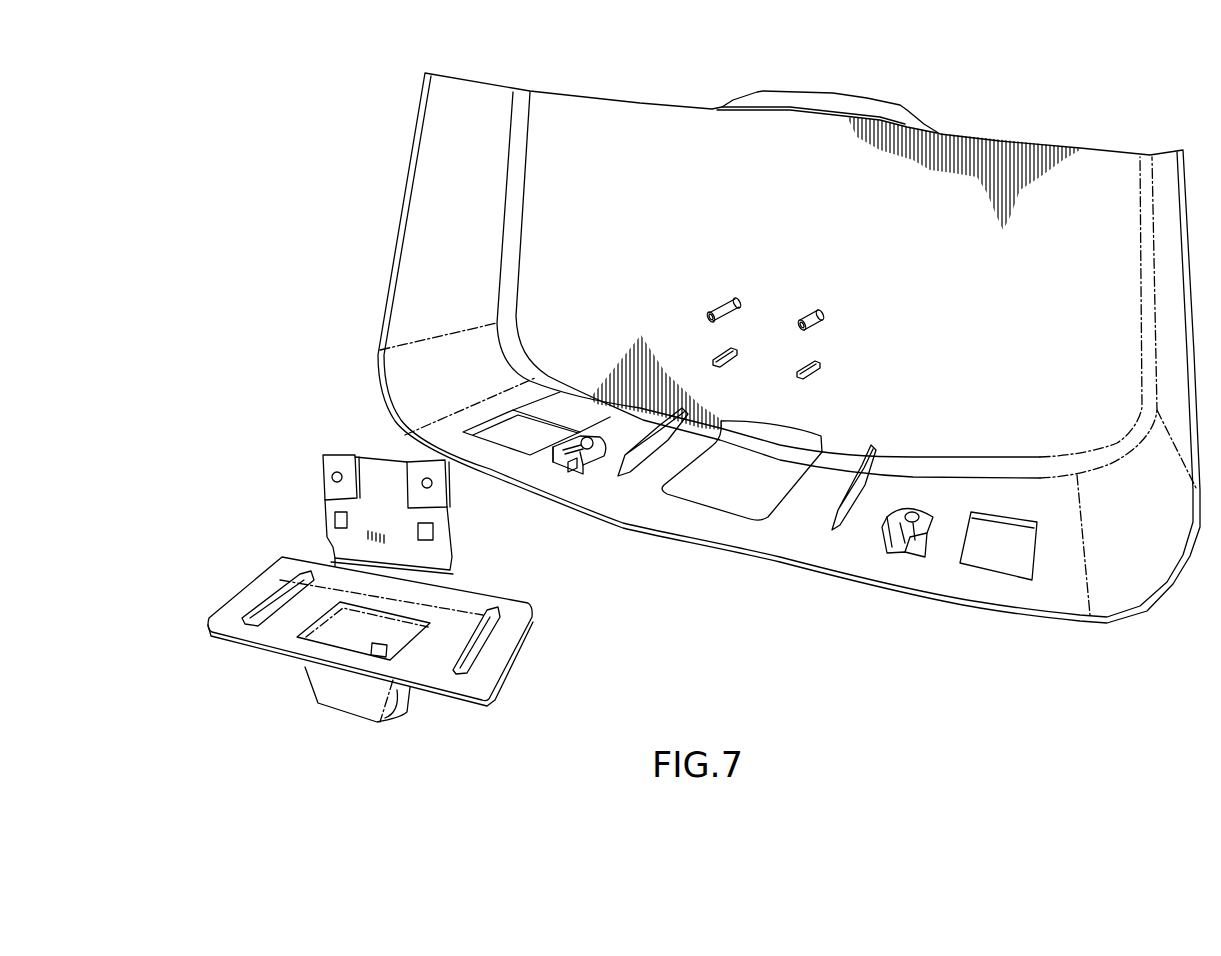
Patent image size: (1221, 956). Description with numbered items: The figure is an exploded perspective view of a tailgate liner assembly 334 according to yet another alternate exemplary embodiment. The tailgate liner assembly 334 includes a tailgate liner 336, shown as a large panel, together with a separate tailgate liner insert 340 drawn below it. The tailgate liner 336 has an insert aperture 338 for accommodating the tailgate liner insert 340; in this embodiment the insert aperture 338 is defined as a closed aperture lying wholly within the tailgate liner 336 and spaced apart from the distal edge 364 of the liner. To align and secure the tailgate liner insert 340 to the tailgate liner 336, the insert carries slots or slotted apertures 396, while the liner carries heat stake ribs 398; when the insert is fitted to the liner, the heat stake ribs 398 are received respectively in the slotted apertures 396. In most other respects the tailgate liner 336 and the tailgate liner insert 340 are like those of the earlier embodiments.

The tailgate liner assembly 334 is at (218, 76).
The tailgate liner 336 is at (357, 241).
The insert aperture 338 is at (708, 498).
The tailgate liner insert 340 is at (440, 706).
The distal edge 364 is at (948, 599).
The slotted apertures 396 is at (287, 600).
The heat stake ribs 398 is at (642, 453).